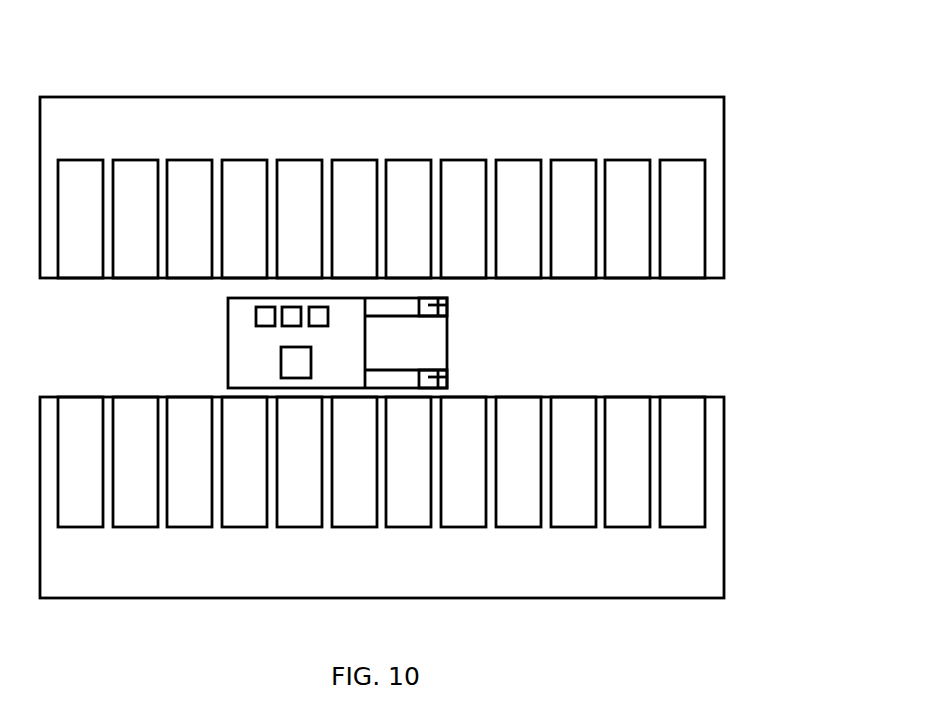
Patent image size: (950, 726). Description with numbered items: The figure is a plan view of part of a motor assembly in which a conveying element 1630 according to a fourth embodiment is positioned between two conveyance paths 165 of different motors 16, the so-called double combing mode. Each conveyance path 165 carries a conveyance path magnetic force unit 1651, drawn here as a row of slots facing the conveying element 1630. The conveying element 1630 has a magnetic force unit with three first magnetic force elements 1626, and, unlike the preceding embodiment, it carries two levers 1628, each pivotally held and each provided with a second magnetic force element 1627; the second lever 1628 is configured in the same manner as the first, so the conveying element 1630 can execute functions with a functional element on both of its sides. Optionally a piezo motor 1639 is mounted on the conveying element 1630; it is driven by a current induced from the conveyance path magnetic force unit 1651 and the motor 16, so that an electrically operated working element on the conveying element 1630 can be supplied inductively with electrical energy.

The motor 16 is at (420, 334).
The conveyance path 165 is at (663, 110).
The conveyance path magnetic force unit 1651 is at (680, 267).
The conveying element 1630 is at (241, 373).
The first magnetic force element 1626 is at (256, 311).
The piezo motor 1639 is at (290, 356).
The second magnetic force element 1627 is at (448, 307).
The lever 1628 is at (398, 309).